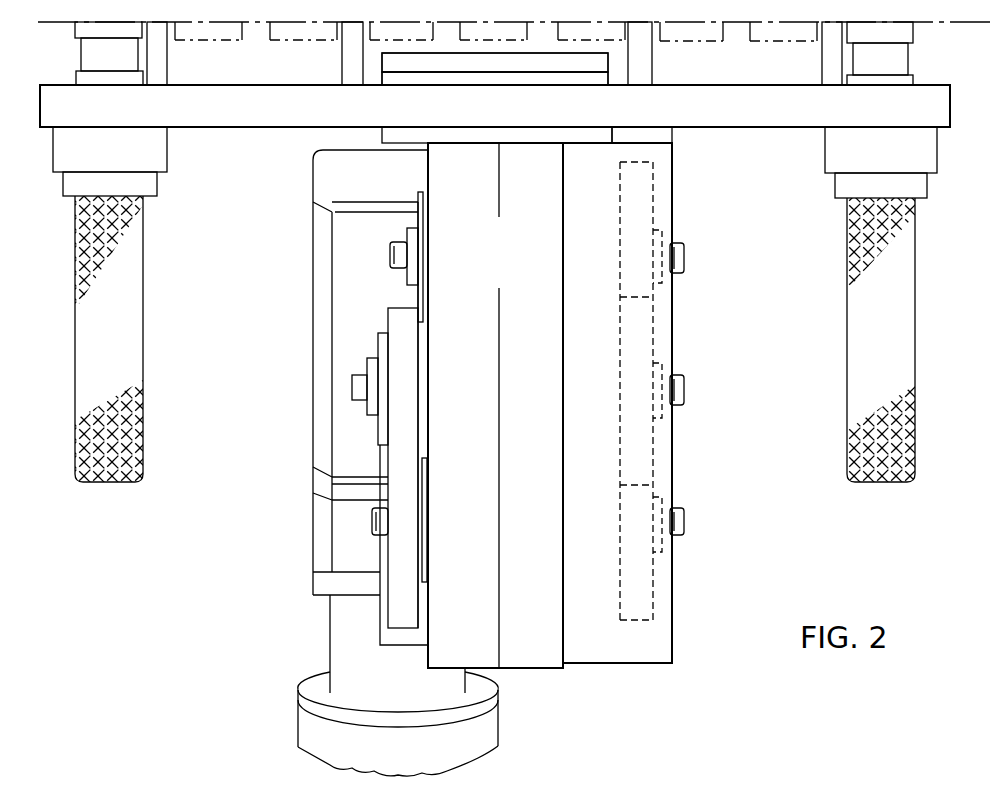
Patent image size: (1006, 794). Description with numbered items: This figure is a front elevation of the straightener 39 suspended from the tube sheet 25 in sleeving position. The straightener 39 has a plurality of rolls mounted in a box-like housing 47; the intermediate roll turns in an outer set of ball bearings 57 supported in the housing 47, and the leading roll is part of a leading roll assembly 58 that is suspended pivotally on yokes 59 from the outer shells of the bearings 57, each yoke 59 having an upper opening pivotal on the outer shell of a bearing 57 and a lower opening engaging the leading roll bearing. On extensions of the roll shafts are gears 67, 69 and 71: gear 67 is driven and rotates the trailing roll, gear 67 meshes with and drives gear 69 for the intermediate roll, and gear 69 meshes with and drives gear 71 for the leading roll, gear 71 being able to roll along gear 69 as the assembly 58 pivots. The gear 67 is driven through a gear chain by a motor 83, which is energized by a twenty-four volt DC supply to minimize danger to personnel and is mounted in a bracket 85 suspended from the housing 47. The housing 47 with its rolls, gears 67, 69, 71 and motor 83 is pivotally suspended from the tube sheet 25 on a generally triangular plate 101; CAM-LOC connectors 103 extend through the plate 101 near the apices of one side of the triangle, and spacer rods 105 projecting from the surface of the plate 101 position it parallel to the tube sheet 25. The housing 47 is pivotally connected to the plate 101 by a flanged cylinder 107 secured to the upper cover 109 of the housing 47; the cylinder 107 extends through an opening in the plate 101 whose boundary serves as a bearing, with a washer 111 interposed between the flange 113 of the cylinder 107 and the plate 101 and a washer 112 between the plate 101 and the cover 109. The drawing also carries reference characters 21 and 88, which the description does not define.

The frame member 21 is at (724, 42).
The tube sheet 25 is at (790, 40).
The straightener 39 is at (728, 462).
The housing 47 is at (516, 259).
The outer set of ball bearings 57 is at (383, 332).
The leading roll assembly 58 is at (366, 514).
The yoke 59 is at (395, 518).
The gear 67 is at (637, 220).
The gear 69 is at (637, 365).
The gear 71 is at (637, 590).
The motor 83 is at (306, 680).
The bracket 85 is at (322, 177).
The housing bottom 88 is at (608, 665).
The plate 101 is at (252, 97).
The CAM-LOC connector 103 is at (128, 224).
The spacer rod 105 is at (156, 80).
The flanged cylinder 107 is at (376, 70).
The upper cover 109 is at (675, 172).
The washer 111 is at (522, 78).
The washer 112 is at (541, 140).
The flange 113 is at (458, 63).